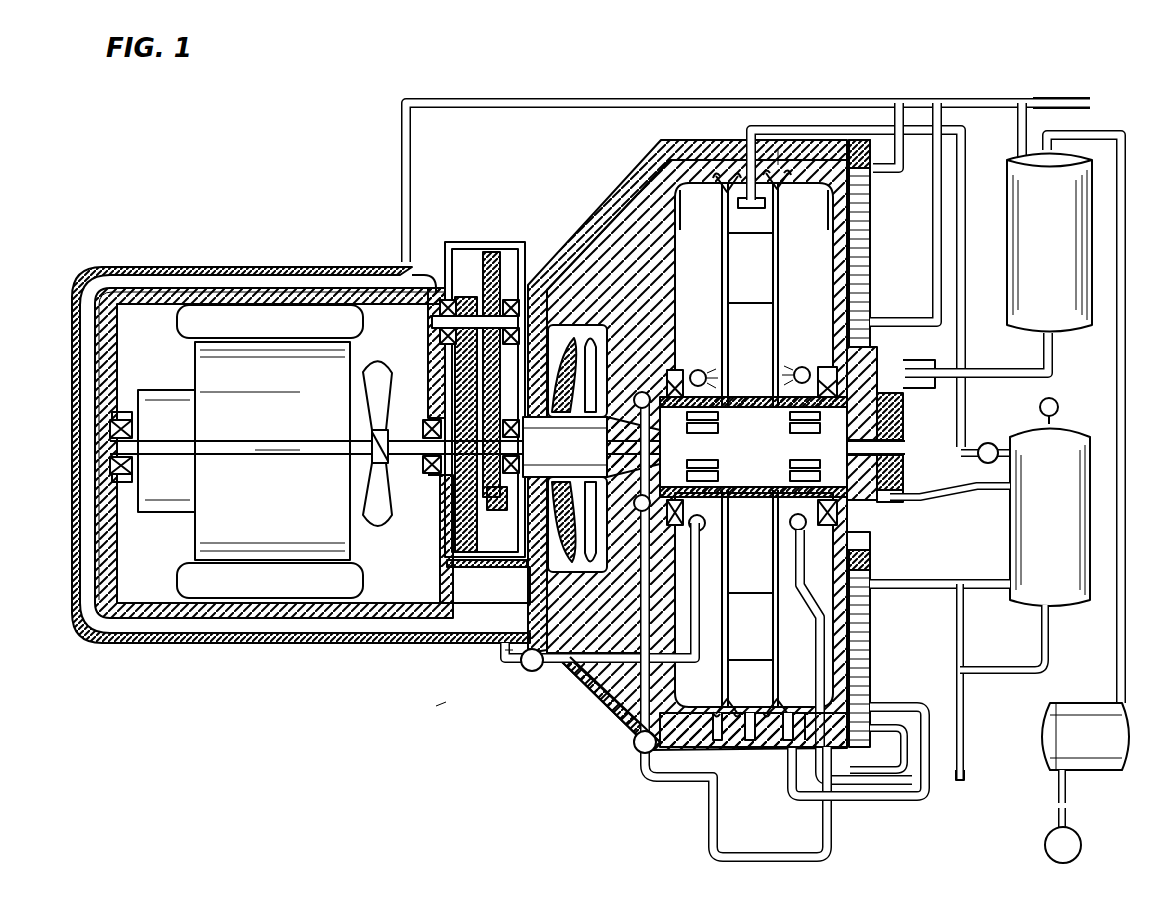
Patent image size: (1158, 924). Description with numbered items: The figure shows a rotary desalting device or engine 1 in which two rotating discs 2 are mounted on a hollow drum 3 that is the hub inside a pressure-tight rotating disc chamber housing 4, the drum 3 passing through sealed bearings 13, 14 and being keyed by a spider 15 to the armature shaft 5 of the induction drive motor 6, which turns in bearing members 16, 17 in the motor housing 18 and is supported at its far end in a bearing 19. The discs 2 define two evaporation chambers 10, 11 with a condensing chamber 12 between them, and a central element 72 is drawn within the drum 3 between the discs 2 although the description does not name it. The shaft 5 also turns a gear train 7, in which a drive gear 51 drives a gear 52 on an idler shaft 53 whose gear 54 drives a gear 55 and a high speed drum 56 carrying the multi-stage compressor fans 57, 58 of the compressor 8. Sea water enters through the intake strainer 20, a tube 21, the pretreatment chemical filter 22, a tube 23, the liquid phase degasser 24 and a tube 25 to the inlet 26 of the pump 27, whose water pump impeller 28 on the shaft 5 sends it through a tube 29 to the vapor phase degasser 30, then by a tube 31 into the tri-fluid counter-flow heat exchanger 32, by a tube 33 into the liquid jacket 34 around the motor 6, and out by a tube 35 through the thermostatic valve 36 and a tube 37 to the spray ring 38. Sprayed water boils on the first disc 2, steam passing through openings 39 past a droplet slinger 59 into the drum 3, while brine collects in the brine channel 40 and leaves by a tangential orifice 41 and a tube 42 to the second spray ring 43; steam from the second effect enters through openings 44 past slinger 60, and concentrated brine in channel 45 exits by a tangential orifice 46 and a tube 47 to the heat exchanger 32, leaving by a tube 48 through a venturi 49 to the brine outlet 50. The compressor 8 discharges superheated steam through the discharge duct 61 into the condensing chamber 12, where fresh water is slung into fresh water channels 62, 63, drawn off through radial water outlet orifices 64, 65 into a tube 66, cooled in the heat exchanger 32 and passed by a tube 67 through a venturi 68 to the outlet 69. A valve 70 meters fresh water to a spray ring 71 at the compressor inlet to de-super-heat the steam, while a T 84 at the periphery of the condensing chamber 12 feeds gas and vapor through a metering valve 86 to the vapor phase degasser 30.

The rotary desalting device 1 is at (440, 702).
The rotating discs 2 is at (780, 290).
The hollow drum 3 is at (735, 398).
The rotating disc chamber housing 4 is at (790, 160).
The armature shaft 5 is at (390, 440).
The drive motor 6 is at (215, 315).
The gear train 7 is at (512, 250).
The compressor 8 is at (590, 262).
The evaporation chamber 10 is at (708, 292).
The evaporation chamber 11 is at (816, 266).
The condensing chamber 12 is at (762, 292).
The sealed bearing 13 is at (676, 368).
The sealed bearing 14 is at (826, 365).
The spider 15 is at (713, 444).
The bearing member 16 is at (122, 480).
The bearing member 17 is at (432, 480).
The housing 18 is at (425, 388).
The bearing 19 is at (880, 462).
The intake strainer 20 is at (1045, 848).
The tube 21 is at (1068, 803).
The pretreatment chemical filter 22 is at (1097, 705).
The tube 23 is at (1116, 633).
The liquid phase degasser 24 is at (1082, 312).
The tube 25 is at (1052, 360).
The inlet 26 is at (908, 368).
The pump 27 is at (870, 368).
The water pump impeller 28 is at (905, 418).
The tube 29 is at (962, 498).
The vapor phase degasser 30 is at (1088, 435).
The tube 31 is at (950, 578).
The tri-fluid counter-flow heat exchanger 32 is at (872, 552).
The tube 33 is at (600, 98).
The liquid jacket 34 is at (268, 266).
The tube 35 is at (495, 660).
The thermostatic valve 36 is at (525, 672).
The tube 37 is at (590, 680).
The spray ring 38 is at (706, 528).
The openings 39 is at (718, 466).
The brine channel 40 is at (717, 186).
The tangential orifice 41 is at (716, 740).
The tube 42 is at (820, 860).
The second spray ring 43 is at (804, 532).
The openings 44 is at (790, 470).
The concentrated brine channel 45 is at (786, 186).
The tangential orifice 46 is at (807, 712).
The tube 47 is at (903, 705).
The tube 48 is at (932, 266).
The venturi 49 is at (1018, 98).
The brine outlet 50 is at (1092, 103).
The drive gear 51 is at (440, 392).
The gear 52 is at (462, 300).
The idler shaft 53 is at (438, 322).
The gear 54 is at (488, 248).
The gear 55 is at (495, 512).
The high speed drum 56 is at (594, 525).
The compressor fan 57 is at (560, 345).
The compressor fan 58 is at (598, 365).
The droplet slinger 59 is at (703, 368).
The droplet slinger 60 is at (795, 368).
The discharge duct 61 is at (625, 200).
The fresh water channel 62 is at (735, 712).
The fresh water channel 63 is at (775, 712).
The radial water outlet orifice 64 is at (750, 745).
The radial water outlet orifice 65 is at (790, 748).
The tube 66 is at (820, 782).
The tube 67 is at (930, 598).
The venturi 68 is at (966, 675).
The outlet 69 is at (966, 767).
The valve 70 is at (633, 742).
The spray ring 71 is at (636, 508).
The piston 72 is at (752, 236).
The T 84 is at (738, 206).
The metering valve 86 is at (988, 442).